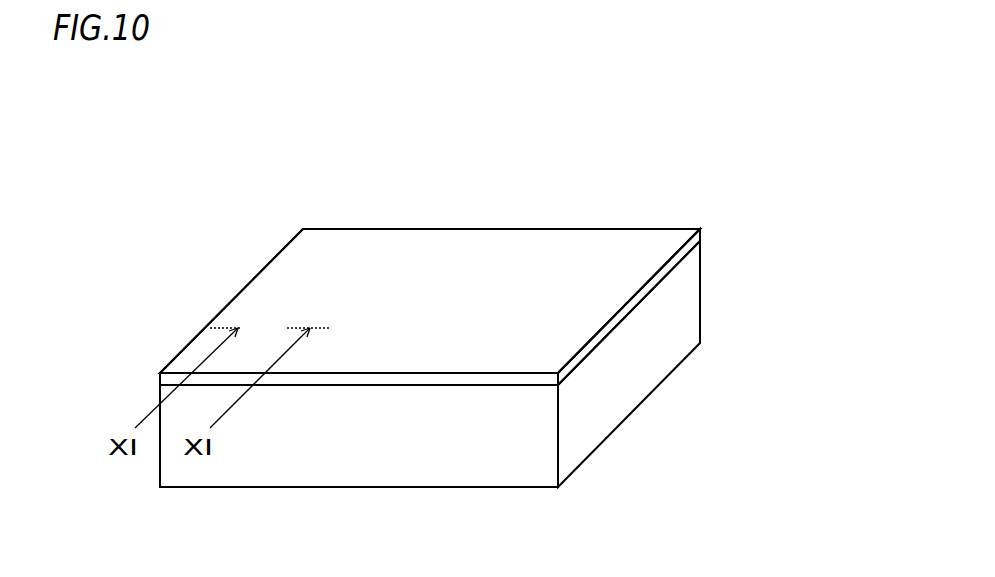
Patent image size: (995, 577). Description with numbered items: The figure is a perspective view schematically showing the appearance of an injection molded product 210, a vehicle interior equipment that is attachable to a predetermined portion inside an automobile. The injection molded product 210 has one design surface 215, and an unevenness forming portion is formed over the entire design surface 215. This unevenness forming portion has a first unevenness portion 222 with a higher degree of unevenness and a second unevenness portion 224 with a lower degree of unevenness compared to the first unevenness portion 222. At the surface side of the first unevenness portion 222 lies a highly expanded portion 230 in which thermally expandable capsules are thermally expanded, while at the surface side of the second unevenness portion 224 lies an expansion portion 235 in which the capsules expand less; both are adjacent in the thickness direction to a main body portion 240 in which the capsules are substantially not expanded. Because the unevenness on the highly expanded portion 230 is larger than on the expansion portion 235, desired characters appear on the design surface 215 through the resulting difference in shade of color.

The injection molded product 210 is at (478, 285).
The design surface 215 is at (643, 257).
The first unevenness portion 222 is at (462, 255).
The second unevenness portion 224 is at (590, 253).
The highly expanded portion 230 is at (447, 257).
The expansion portion 235 is at (582, 320).
The main body portion 240 is at (590, 412).